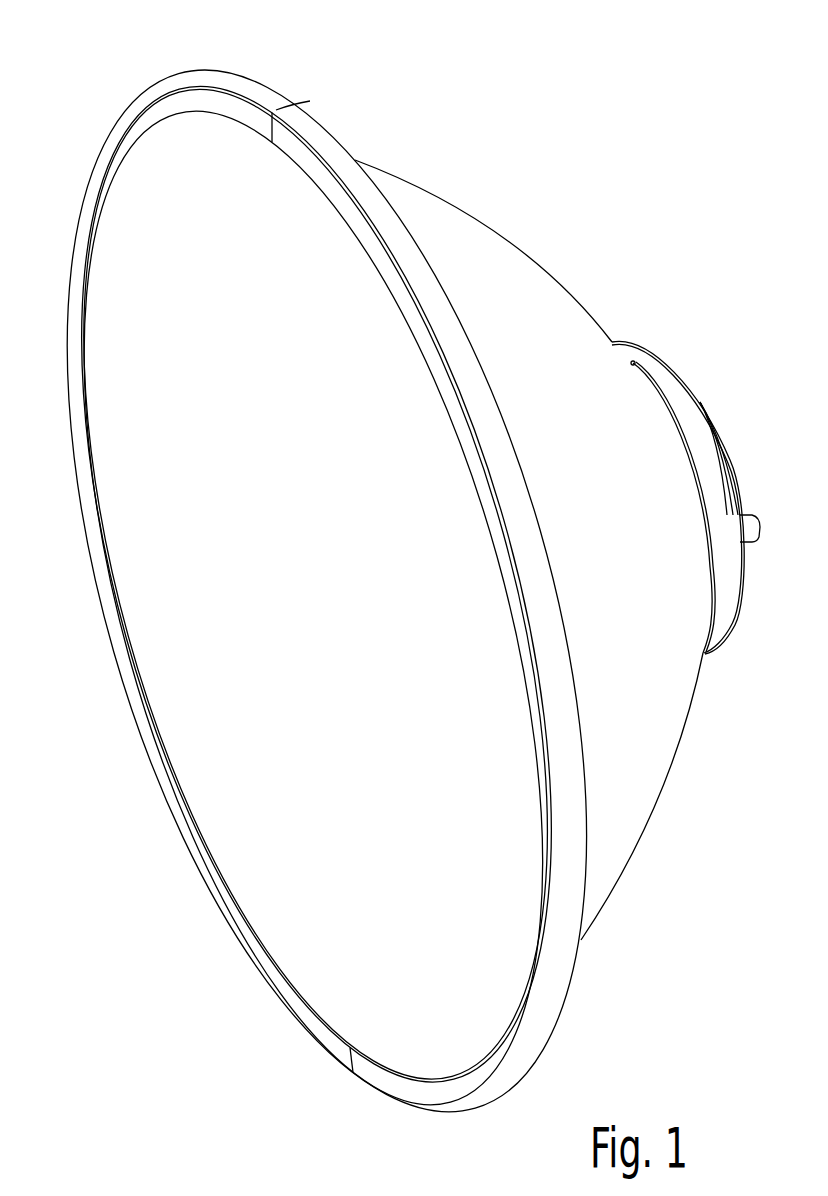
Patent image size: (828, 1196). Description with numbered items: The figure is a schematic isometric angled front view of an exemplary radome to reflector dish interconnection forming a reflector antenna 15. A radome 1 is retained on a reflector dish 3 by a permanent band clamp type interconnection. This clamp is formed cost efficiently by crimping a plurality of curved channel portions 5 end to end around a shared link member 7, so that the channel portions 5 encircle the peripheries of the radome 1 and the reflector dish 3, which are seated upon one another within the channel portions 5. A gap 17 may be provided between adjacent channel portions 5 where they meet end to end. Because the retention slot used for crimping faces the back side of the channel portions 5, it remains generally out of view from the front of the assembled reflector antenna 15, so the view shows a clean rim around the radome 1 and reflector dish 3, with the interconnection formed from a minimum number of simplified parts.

The radome 1 is at (306, 903).
The reflector dish 3 is at (545, 330).
The curved channel portions 5 is at (133, 128).
The link member 7 is at (300, 107).
The reflector antenna 15 is at (497, 172).
The gap 17 is at (285, 108).